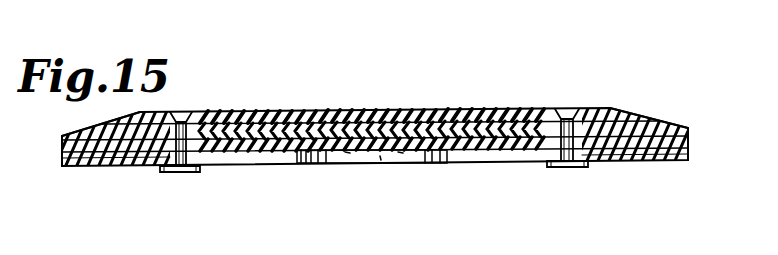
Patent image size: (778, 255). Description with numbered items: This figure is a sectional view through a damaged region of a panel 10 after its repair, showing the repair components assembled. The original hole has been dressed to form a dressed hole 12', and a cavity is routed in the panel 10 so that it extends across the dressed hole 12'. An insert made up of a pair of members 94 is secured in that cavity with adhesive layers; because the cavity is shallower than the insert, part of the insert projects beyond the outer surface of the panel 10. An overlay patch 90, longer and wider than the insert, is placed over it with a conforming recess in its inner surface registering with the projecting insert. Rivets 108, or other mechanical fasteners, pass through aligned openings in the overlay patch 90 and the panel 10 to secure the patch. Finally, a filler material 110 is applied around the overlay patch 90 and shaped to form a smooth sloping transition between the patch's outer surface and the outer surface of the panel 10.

The panel 10 is at (667, 162).
The dressed hole 12' is at (372, 186).
The overlay patch 90 is at (315, 110).
The member 94 is at (262, 130).
The rivets 108 is at (182, 173).
The filler material 110 is at (110, 122).